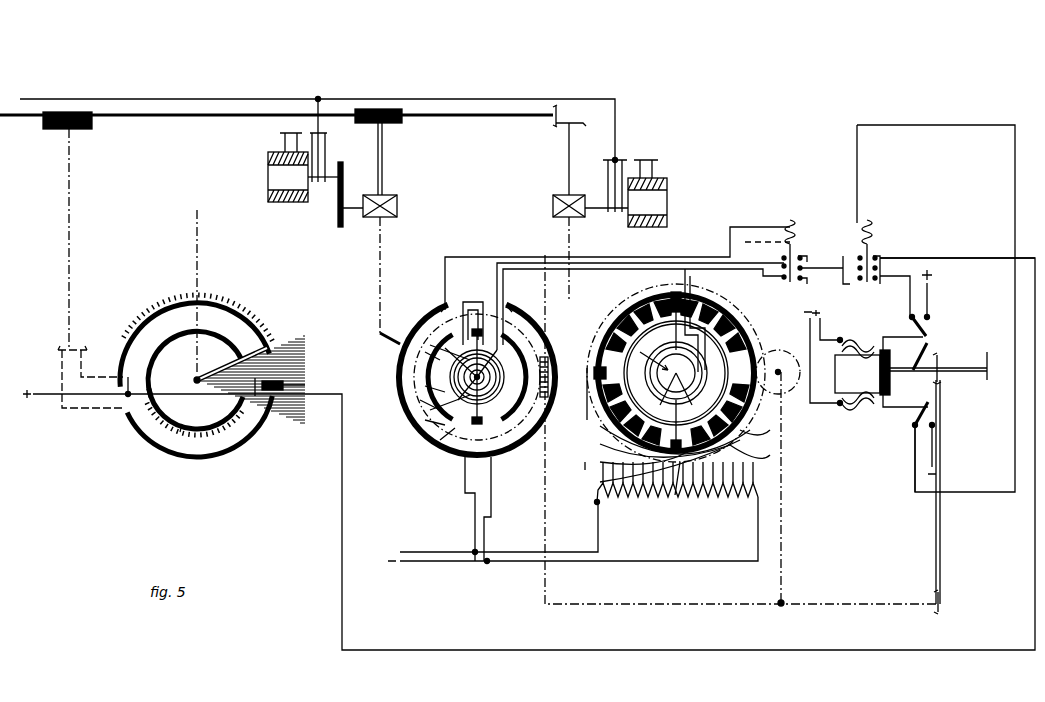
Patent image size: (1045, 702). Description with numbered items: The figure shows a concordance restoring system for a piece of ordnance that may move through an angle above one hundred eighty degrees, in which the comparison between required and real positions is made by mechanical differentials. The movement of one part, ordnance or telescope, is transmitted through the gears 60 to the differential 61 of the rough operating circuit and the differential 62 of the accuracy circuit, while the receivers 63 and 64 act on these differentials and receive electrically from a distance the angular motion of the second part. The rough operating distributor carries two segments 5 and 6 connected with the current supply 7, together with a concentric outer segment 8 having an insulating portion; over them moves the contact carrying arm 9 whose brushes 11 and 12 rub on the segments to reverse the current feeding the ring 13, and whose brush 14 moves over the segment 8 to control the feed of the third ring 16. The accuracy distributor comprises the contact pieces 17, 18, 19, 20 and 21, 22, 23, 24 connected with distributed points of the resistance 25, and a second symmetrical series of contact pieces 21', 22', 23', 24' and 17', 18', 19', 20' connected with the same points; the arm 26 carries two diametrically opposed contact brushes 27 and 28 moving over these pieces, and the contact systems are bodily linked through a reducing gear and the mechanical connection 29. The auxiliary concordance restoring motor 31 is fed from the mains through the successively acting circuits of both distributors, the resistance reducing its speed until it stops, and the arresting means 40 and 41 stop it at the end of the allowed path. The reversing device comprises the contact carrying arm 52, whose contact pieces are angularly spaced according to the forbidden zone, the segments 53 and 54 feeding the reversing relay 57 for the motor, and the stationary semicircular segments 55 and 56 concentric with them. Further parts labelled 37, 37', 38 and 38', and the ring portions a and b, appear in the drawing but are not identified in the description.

The segment 5 is at (450, 450).
The segment 6 is at (498, 452).
The current supply 7 is at (561, 531).
The segment 8 is at (400, 374).
The contact carrying arm 9 is at (425, 320).
The brush 11 is at (440, 440).
The brush 12 is at (425, 386).
The ring 13 is at (427, 405).
The brush 14 is at (475, 300).
The third ring 16 is at (552, 448).
The contact piece 17 is at (701, 295).
The contact piece 18 is at (719, 304).
The contact piece 19 is at (737, 314).
The contact piece 20 is at (750, 330).
The contact piece 21 is at (656, 295).
The contact piece 22 is at (636, 301).
The contact piece 23 is at (619, 311).
The contact piece 24 is at (676, 373).
The resistance 25 is at (678, 500).
The arm 26 is at (661, 395).
The contact brush 27 is at (676, 373).
The contact brush 28 is at (691, 395).
The mechanical connection 29 is at (663, 608).
The auxiliary concordance restoring motor 31 is at (895, 360).
The brush 37 is at (586, 390).
The cam 37' is at (778, 360).
The brush 38 is at (640, 317).
The tap 38' is at (667, 492).
The arresting means 40 is at (978, 328).
The arresting means 41 is at (880, 422).
The contact carrying arm 52 is at (200, 378).
The segment 53 is at (117, 330).
The segment 54 is at (210, 491).
The stationary semicircular segment 55 is at (117, 302).
The stationary semicircular segment 56 is at (155, 491).
The reversing relay 57 is at (870, 228).
The gears 60 is at (432, 146).
The differential 61 is at (448, 211).
The differential 62 is at (512, 211).
The receiver 63 is at (237, 180).
The receiver 64 is at (717, 209).
The contact piece 17' is at (657, 465).
The contact piece 18' is at (627, 459).
The contact piece 19' is at (647, 445).
The contact piece 20' is at (657, 434).
The contact piece 21' is at (677, 503).
The contact piece 22' is at (691, 476).
The contact piece 23' is at (768, 454).
The contact piece 24' is at (774, 428).
The ring segment a is at (437, 299).
The ring segment b is at (512, 298).